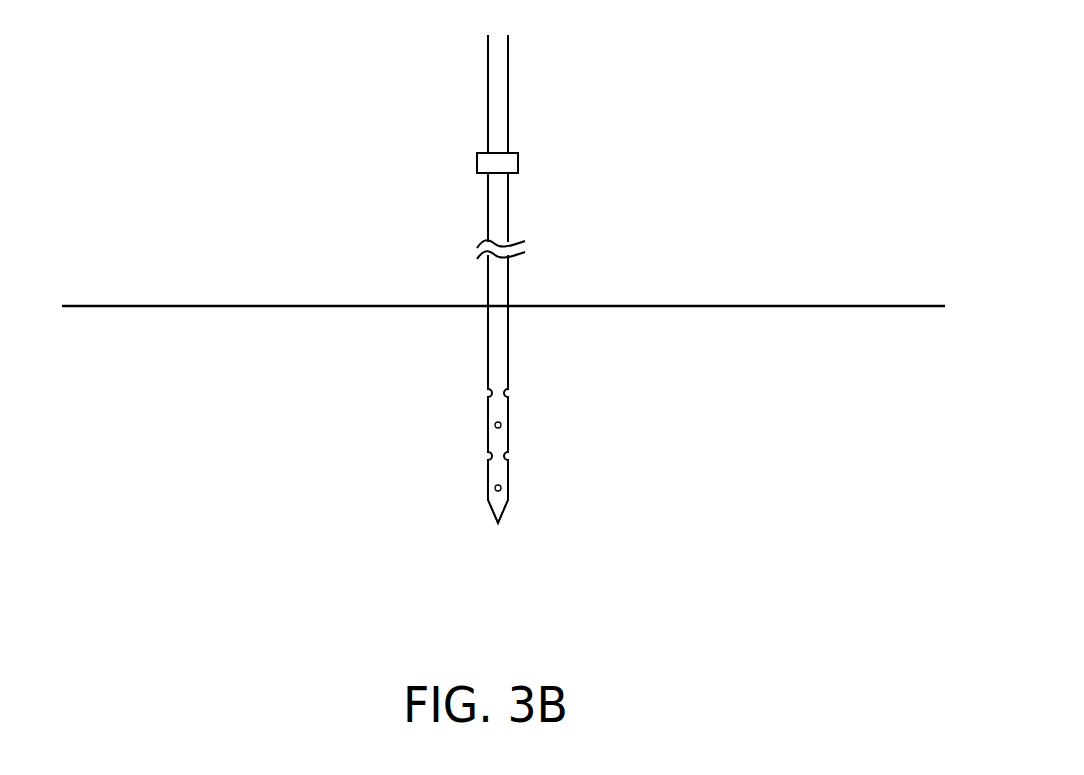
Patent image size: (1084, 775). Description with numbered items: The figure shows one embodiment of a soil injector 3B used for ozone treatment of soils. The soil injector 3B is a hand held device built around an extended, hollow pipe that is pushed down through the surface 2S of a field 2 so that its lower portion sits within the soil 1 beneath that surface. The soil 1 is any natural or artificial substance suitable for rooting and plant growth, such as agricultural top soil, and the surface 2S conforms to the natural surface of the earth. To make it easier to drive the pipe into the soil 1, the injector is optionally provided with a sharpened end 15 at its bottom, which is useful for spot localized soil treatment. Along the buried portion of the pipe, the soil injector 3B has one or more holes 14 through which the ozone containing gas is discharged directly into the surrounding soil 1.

The soil 1 is at (276, 374).
The field 2 is at (370, 305).
The surface of field 2S is at (700, 305).
The soil injector 3B is at (531, 163).
The holes 14 is at (502, 425).
The sharpened end 15 is at (505, 507).